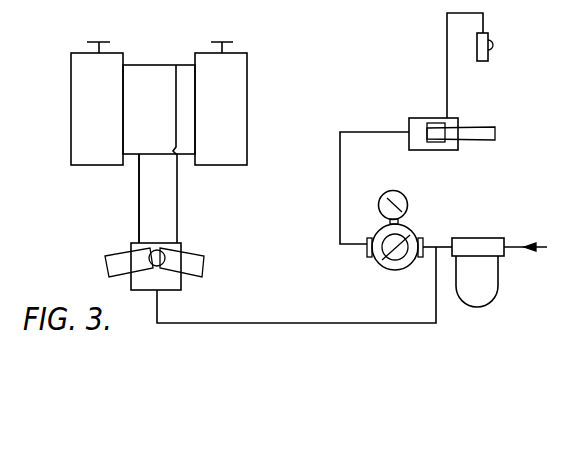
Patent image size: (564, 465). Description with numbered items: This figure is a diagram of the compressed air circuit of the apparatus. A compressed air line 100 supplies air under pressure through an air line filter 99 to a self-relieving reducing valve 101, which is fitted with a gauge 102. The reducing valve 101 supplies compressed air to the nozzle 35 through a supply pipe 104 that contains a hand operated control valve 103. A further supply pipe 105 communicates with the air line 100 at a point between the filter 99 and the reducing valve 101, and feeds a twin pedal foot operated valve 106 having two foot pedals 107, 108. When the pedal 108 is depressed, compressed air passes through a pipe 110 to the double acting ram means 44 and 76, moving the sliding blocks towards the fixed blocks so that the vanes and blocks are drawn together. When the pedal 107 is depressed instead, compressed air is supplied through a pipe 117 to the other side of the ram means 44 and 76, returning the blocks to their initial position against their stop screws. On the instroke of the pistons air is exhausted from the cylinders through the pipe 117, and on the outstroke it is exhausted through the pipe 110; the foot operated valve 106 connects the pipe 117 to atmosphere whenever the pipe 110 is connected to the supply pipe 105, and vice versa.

The double acting compressed air operated ram means 44 is at (82, 72).
The double acting compressed air operated ram means 76 is at (230, 98).
The pipe 110 is at (177, 215).
The pipe 117 is at (139, 192).
The twin pedal foot operated valve 106 is at (172, 285).
The foot pedal 107 is at (123, 263).
The foot pedal 108 is at (193, 265).
The supply pipe 105 is at (433, 280).
The supply pipe 104 is at (362, 128).
The hand operated control valve 103 is at (452, 121).
The nozzle 35 is at (484, 40).
The self-relieving reducing valve 101 is at (408, 232).
The gauge 102 is at (392, 192).
The air line filter 99 is at (488, 288).
The compressed air line 100 is at (517, 240).